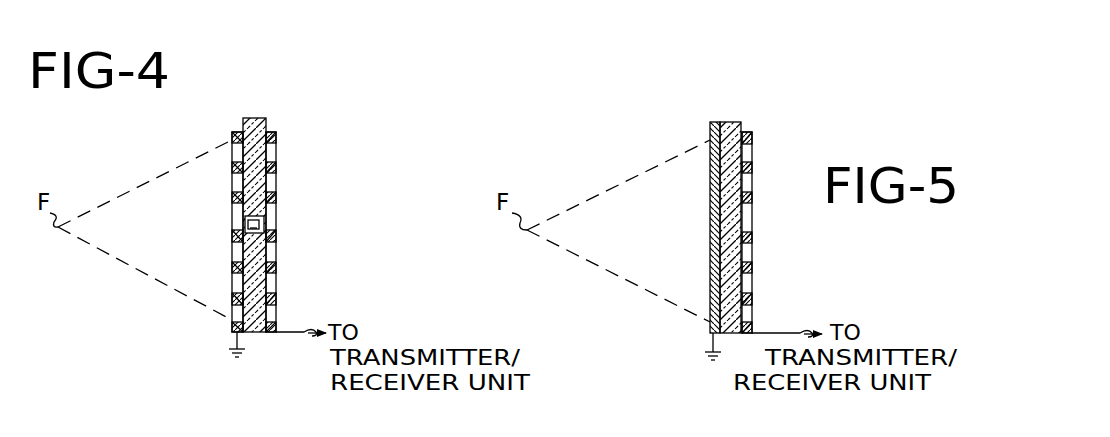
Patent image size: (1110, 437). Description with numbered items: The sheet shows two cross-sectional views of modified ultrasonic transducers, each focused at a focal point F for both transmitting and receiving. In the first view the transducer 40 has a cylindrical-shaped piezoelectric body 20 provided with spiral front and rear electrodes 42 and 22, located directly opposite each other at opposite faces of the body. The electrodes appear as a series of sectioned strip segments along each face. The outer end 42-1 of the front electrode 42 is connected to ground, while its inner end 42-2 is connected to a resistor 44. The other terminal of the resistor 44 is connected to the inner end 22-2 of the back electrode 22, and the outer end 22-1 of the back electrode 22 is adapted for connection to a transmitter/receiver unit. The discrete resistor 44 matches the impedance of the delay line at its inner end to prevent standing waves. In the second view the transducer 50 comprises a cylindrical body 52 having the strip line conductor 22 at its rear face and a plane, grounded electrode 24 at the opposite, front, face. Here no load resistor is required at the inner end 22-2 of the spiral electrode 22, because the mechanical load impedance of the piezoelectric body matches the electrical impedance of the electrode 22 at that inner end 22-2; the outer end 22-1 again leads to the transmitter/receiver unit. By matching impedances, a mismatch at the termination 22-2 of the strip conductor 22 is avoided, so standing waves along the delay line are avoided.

In FIG. 4, the transducer 40 is at (240, 113).
In FIG. 4, the piezoelectric body 20 is at (262, 119).
In FIG. 4, the rear electrode 22 is at (278, 136).
In FIG. 5, the rear electrode 22 is at (755, 137).
In FIG. 4, the outer end of back electrode 22-1 is at (271, 334).
In FIG. 5, the outer end of back electrode 22-1 is at (746, 334).
In FIG. 4, the inner end of back electrode 22-2 is at (277, 240).
In FIG. 5, the inner end of back electrode 22-2 is at (753, 240).
In FIG. 4, the front electrode 42 is at (231, 135).
In FIG. 4, the outer end of front electrode 42-1 is at (232, 327).
In FIG. 4, the inner end of front electrode 42-2 is at (232, 235).
In FIG. 4, the resistor 44 is at (264, 222).
In FIG. 5, the transducer 50 is at (693, 133).
In FIG. 5, the cylindrical body 52 is at (735, 122).
In FIG. 5, the plane grounded electrode 24 is at (714, 196).